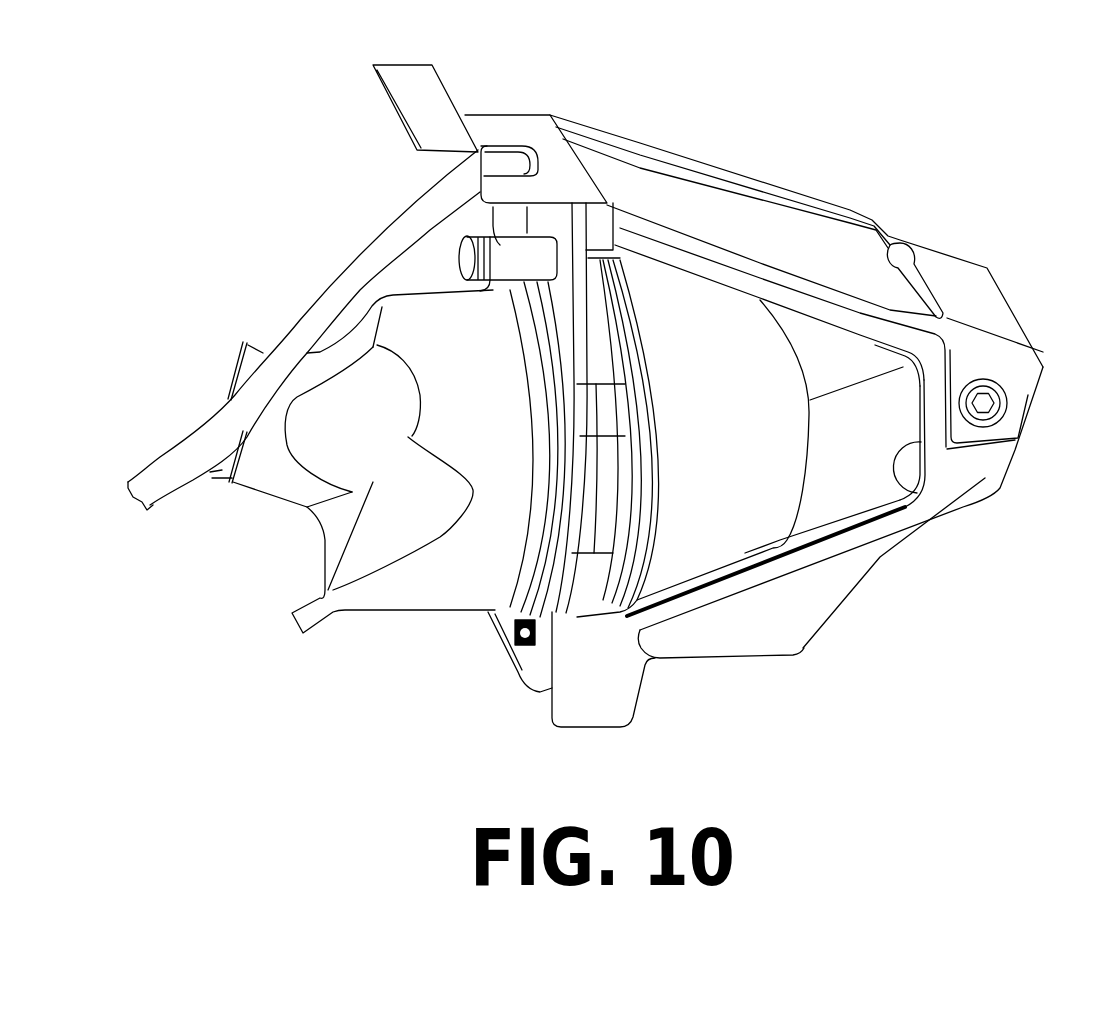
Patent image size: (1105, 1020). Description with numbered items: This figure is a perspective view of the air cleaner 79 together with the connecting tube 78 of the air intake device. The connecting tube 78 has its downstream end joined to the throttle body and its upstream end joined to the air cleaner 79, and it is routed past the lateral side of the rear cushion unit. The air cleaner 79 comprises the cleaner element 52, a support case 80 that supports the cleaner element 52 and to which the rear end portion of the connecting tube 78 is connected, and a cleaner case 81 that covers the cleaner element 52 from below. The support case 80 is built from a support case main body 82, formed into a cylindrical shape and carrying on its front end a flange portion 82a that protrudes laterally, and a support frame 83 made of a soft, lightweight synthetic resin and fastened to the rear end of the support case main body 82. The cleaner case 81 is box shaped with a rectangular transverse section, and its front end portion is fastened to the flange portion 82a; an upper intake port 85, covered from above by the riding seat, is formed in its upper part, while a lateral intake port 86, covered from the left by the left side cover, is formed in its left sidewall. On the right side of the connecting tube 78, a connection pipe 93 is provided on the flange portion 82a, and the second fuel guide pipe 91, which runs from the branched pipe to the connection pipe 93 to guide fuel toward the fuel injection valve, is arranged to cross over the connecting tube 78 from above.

The cleaner element 52 is at (740, 328).
The connecting tube 78 is at (417, 600).
The air cleaner 79 is at (791, 188).
The support case 80 is at (638, 293).
The cleaner case 81 is at (993, 303).
The support case main body 82 is at (607, 458).
The flange portion 82a is at (525, 655).
The support frame 83 is at (623, 372).
The upper intake port 85 is at (905, 242).
The lateral intake port 86 is at (905, 488).
The second fuel guide pipe 91 is at (345, 288).
The connection pipe 93 is at (503, 258).